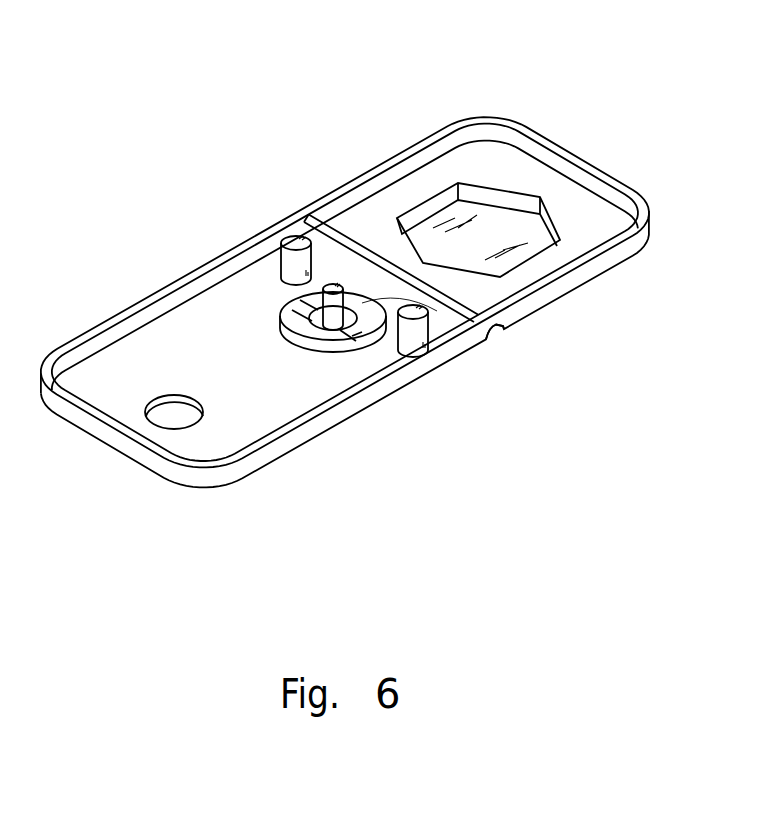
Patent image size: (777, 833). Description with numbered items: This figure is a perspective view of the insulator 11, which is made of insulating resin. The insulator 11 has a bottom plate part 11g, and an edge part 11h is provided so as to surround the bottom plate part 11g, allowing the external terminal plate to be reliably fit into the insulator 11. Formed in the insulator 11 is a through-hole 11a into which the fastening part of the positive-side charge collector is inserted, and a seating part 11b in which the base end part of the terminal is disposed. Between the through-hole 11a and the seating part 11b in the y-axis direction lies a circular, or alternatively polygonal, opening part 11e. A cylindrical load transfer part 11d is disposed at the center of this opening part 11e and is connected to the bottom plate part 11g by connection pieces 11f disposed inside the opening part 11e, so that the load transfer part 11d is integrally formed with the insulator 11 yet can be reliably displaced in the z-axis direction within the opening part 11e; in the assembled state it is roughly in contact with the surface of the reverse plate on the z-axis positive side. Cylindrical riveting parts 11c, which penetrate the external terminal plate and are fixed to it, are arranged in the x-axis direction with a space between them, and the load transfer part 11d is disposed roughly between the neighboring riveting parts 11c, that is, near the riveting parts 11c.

The insulator 11 is at (470, 104).
The through-hole 11a is at (167, 418).
The seating part 11b is at (497, 217).
The riveting parts 11c is at (287, 233).
The load transfer part 11d is at (328, 284).
The opening part 11e is at (502, 328).
The connection pieces 11f is at (293, 343).
The bottom plate part 11g is at (255, 418).
The edge part 11h is at (352, 184).